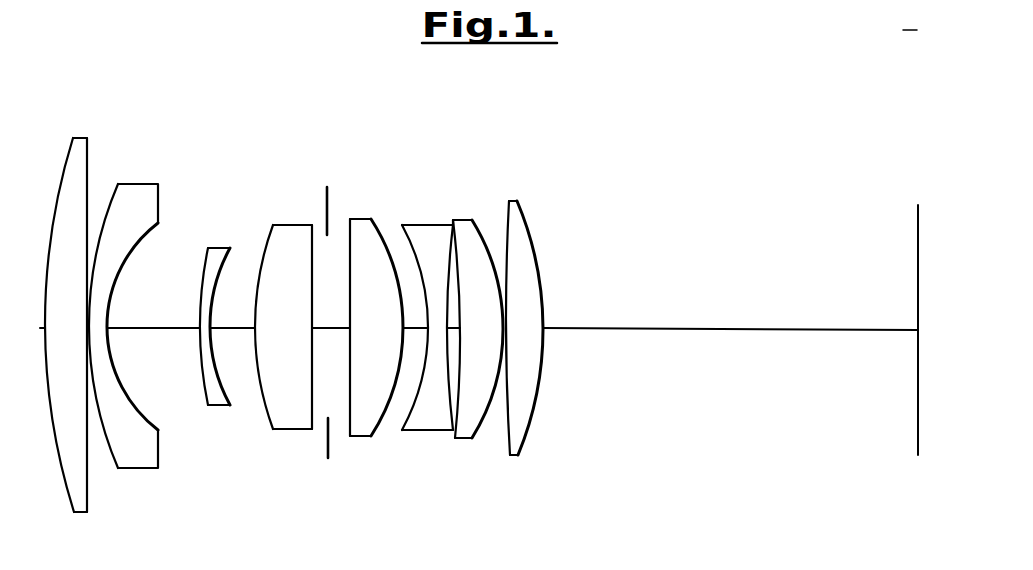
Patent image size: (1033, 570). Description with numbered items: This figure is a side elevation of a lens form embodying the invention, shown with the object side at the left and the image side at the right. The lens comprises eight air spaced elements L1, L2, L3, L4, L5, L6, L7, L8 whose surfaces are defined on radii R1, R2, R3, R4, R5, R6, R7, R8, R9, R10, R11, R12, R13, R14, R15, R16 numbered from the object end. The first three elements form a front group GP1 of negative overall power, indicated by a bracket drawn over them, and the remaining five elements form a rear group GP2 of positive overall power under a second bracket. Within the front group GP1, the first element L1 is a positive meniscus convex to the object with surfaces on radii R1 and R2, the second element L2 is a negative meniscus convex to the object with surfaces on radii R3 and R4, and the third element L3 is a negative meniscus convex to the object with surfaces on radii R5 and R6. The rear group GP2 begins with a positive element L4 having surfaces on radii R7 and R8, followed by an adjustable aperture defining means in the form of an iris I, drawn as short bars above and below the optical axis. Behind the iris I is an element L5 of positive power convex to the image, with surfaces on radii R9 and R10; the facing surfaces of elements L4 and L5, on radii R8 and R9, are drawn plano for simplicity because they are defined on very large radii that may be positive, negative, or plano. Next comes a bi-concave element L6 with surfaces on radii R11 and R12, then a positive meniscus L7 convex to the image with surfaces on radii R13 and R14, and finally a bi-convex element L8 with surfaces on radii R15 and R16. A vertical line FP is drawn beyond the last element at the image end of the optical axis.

The first group GP1 is at (230, 92).
The second group GP2 is at (540, 145).
The first lens element L1 is at (78, 152).
The second lens element L2 is at (137, 200).
The third lens element L3 is at (217, 258).
The fourth lens element L4 is at (290, 240).
The fifth lens element L5 is at (358, 235).
The sixth lens element L6 is at (418, 240).
The seventh lens element L7 is at (462, 240).
The eighth lens element L8 is at (515, 228).
The iris I is at (330, 200).
The focal plane FP is at (918, 261).
The first lens surface R1 is at (63, 486).
The second lens surface R2 is at (89, 498).
The third lens surface R3 is at (115, 461).
The fourth lens surface R4 is at (152, 418).
The fifth lens surface R5 is at (203, 375).
The sixth lens surface R6 is at (228, 390).
The seventh lens surface R7 is at (266, 410).
The eighth lens surface R8 is at (312, 420).
The ninth lens surface R9 is at (350, 422).
The tenth lens surface R10 is at (378, 424).
The eleventh lens surface R11 is at (408, 410).
The twelfth lens surface R12 is at (447, 432).
The thirteenth lens surface R13 is at (462, 432).
The fourteenth lens surface R14 is at (485, 418).
The fifteenth lens surface R15 is at (513, 422).
The sixteenth lens surface R16 is at (533, 408).